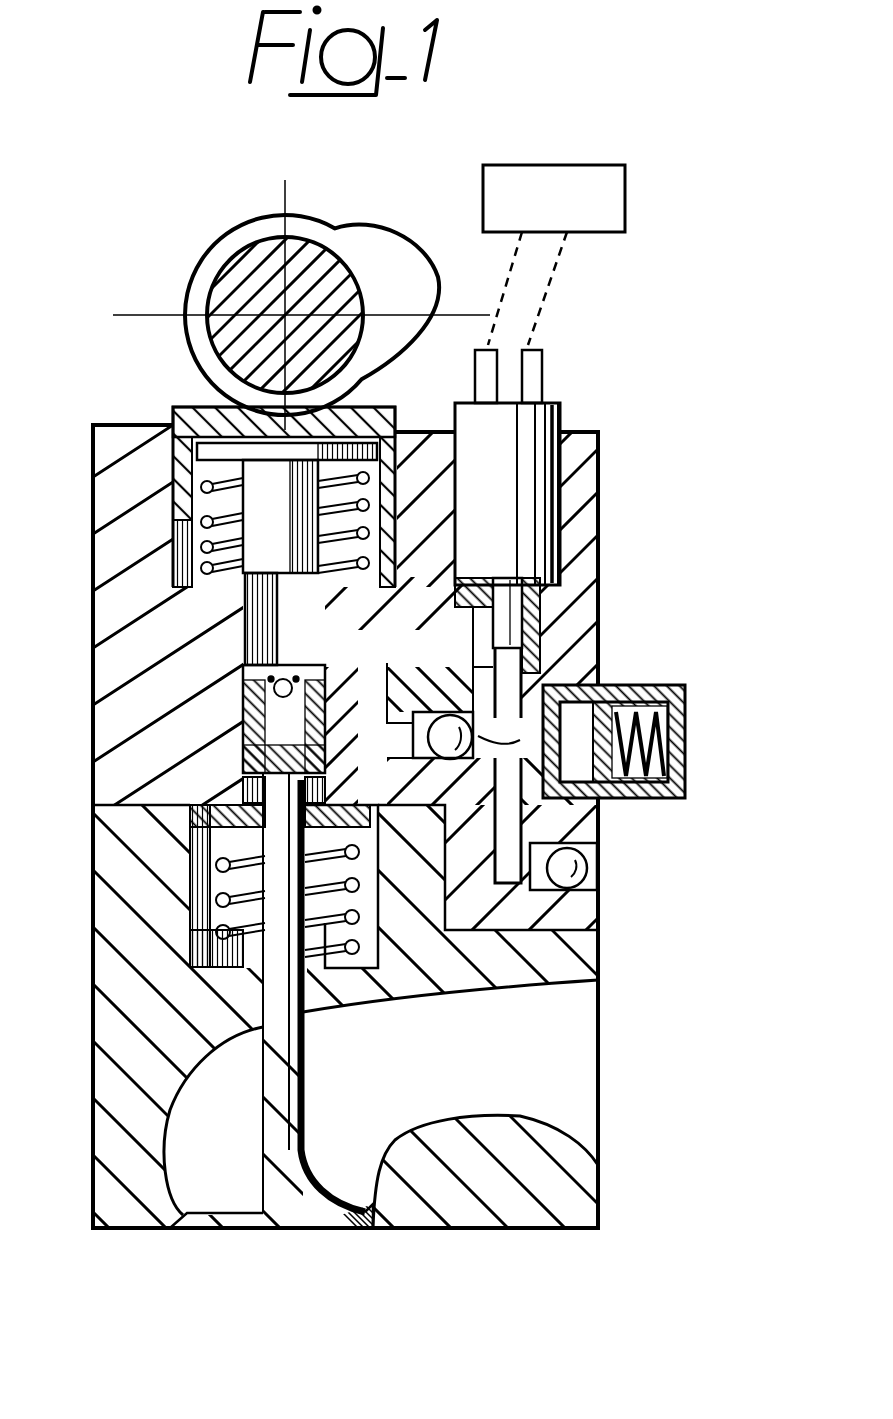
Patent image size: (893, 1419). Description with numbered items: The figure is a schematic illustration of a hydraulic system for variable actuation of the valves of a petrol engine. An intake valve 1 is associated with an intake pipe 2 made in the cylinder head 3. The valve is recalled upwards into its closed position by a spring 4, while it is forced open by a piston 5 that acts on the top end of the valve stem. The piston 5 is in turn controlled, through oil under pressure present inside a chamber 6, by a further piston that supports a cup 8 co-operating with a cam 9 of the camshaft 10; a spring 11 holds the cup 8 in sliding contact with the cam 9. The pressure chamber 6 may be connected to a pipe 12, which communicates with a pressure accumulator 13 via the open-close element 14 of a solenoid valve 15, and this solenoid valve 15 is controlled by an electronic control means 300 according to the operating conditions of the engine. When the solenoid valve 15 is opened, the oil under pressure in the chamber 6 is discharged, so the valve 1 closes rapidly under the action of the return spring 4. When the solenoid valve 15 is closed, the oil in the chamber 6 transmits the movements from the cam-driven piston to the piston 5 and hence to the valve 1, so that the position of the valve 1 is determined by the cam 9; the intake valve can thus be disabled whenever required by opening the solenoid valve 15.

The intake valve 1 is at (262, 1196).
The intake pipe 2 is at (557, 1127).
The cylinder head 3 is at (130, 975).
The spring 4 is at (195, 876).
The piston 5 is at (243, 740).
The chamber 6 is at (243, 652).
The cup 8 is at (190, 405).
The cam 9 is at (354, 242).
The camshaft 10 is at (230, 250).
The spring 11 is at (402, 455).
The pipe 12 is at (596, 683).
The pressure accumulator 13 is at (608, 797).
The open-close element 14 is at (575, 640).
The solenoid valve 15 is at (552, 440).
The electronic control means 300 is at (625, 207).